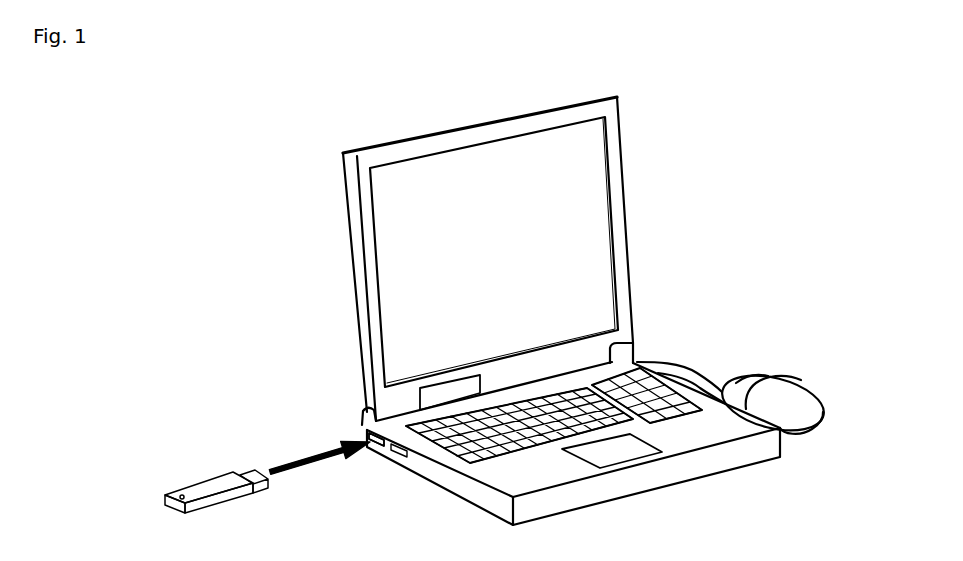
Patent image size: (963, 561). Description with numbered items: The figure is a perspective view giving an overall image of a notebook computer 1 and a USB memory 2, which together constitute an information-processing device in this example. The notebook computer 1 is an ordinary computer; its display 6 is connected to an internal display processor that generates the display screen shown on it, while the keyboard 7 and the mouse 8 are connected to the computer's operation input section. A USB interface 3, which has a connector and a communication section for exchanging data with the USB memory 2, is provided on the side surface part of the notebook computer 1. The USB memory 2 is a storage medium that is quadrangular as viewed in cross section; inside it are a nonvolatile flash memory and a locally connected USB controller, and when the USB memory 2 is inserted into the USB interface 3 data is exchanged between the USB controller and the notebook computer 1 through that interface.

The notebook computer 1 is at (337, 282).
The USB memory 2 is at (150, 487).
The USB interface 3 is at (366, 435).
The display 6 is at (607, 233).
The keyboard 7 is at (447, 447).
The mouse 8 is at (785, 397).